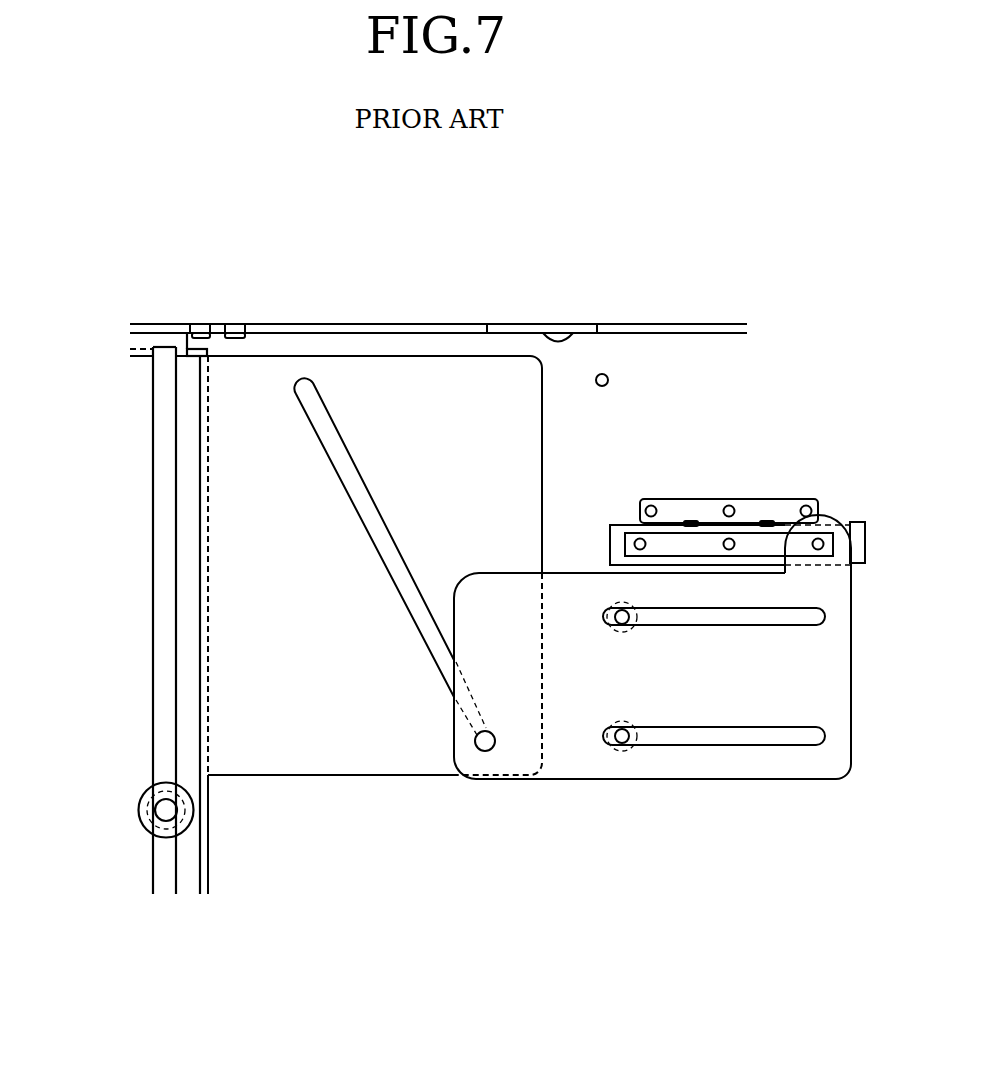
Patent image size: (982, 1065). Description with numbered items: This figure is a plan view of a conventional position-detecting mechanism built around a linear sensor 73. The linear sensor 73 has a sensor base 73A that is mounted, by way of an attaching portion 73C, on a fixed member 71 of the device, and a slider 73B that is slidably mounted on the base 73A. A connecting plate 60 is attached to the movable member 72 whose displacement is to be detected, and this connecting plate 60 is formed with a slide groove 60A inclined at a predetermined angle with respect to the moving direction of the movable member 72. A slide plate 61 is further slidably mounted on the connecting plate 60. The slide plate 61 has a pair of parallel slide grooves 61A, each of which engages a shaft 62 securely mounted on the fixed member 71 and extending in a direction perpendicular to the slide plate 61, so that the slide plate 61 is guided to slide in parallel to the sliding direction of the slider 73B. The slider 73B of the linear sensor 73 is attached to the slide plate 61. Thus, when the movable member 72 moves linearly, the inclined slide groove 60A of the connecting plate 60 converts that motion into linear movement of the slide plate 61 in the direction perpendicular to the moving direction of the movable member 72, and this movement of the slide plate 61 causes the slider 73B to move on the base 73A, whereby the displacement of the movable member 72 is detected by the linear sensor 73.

The fixed member 71 is at (670, 357).
The movable member 72 is at (147, 433).
The connecting plate 60 is at (522, 422).
The slide groove 60A is at (348, 470).
The slide plate 61 is at (775, 770).
The slide grooves 61A is at (785, 620).
The shaft 62 is at (620, 722).
The linear sensor 73 is at (635, 511).
The sensor base 73A is at (616, 541).
The slider 73B is at (820, 548).
The attaching portion 73C is at (808, 503).